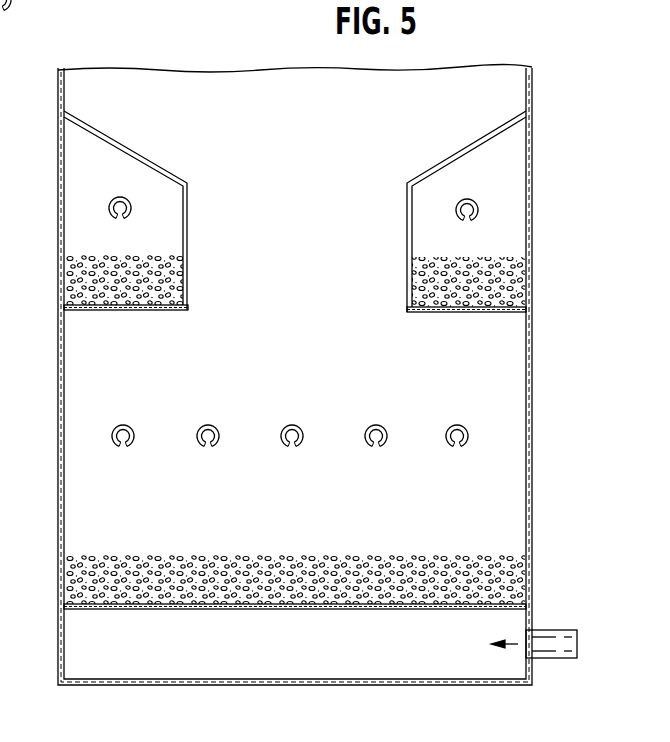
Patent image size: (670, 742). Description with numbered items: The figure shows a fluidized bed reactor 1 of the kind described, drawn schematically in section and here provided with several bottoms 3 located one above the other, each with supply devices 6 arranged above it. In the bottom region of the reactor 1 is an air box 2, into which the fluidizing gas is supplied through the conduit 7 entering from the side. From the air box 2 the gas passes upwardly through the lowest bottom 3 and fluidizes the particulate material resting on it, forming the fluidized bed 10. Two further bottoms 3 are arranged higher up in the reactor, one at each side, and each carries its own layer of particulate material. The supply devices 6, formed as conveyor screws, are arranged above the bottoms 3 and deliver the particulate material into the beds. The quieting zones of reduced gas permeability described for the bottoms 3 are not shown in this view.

The fluidized bed reactor 1 is at (533, 405).
The air box 2 is at (103, 640).
The bottom 3 is at (126, 313).
The supply device 6 is at (115, 198).
The conduit 7 is at (530, 637).
The fluidized bed 10 is at (505, 565).